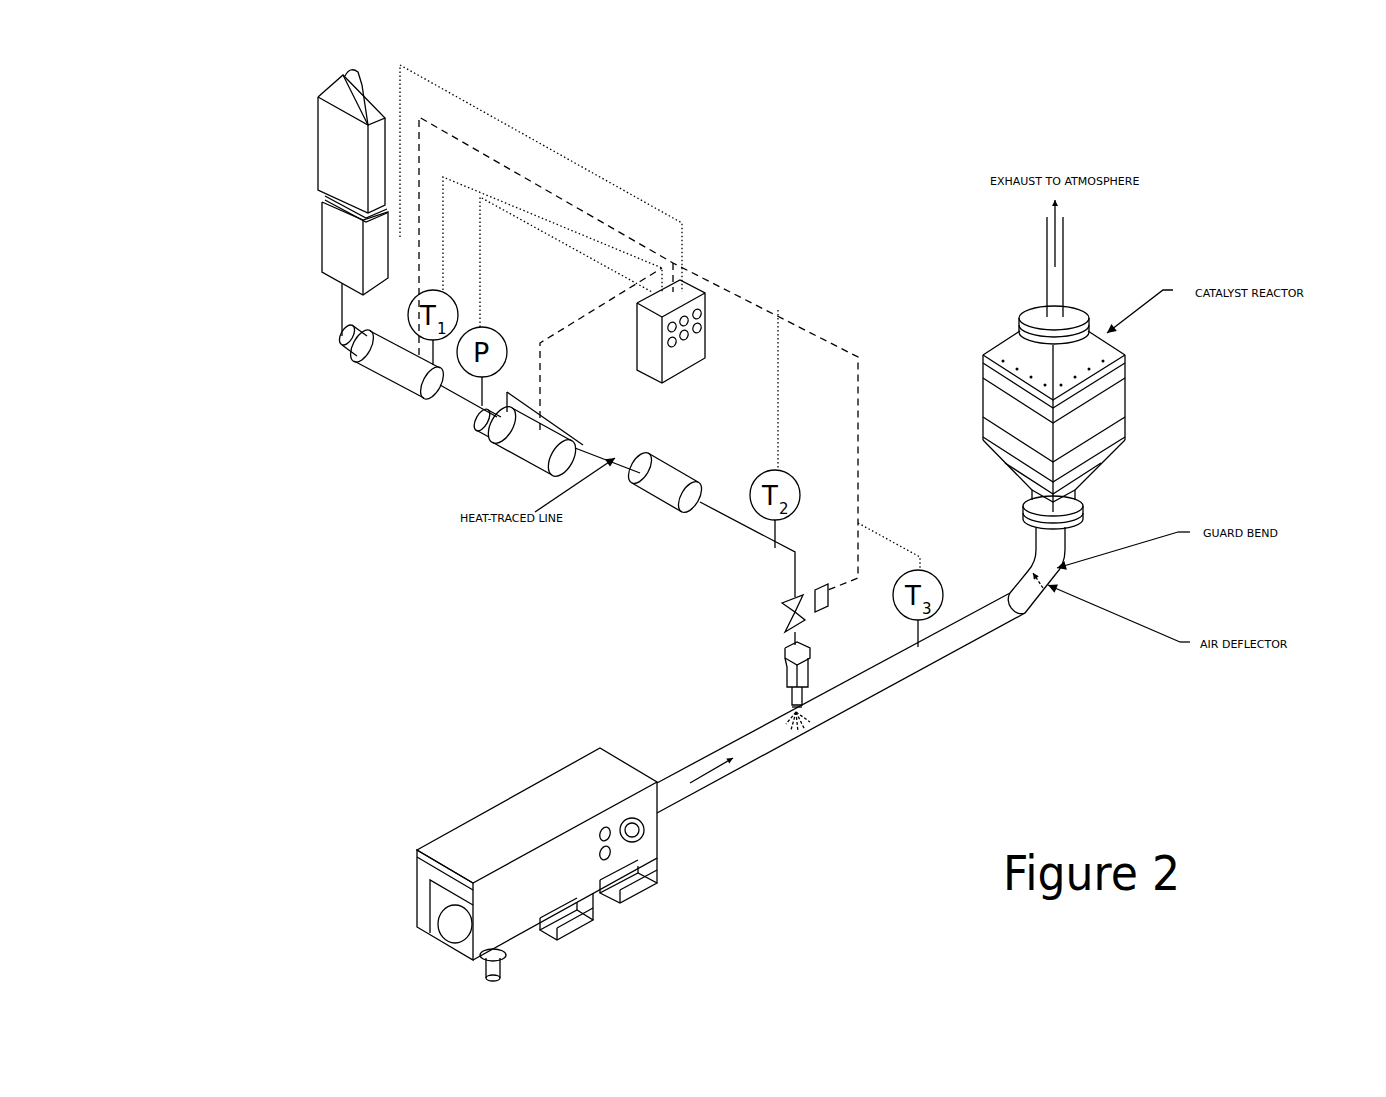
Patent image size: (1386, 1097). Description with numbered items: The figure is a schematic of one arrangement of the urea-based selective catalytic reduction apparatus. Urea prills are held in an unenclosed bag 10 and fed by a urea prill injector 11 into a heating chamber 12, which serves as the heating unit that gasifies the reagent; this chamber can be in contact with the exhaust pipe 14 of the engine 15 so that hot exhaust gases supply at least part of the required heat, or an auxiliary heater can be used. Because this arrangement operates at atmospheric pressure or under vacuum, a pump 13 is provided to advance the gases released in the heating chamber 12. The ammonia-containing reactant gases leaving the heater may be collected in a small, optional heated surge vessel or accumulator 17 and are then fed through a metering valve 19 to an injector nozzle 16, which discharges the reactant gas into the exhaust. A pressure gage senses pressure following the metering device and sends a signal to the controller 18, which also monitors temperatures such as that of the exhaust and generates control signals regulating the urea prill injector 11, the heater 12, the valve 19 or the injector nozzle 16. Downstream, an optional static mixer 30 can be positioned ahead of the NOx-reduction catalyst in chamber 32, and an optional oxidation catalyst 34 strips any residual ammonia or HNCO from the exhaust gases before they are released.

The bag 10 is at (256, 146).
The urea prill injector 11 is at (357, 248).
The heating chamber 12 is at (345, 394).
The pump 13 is at (425, 463).
The exhaust pipe 14 is at (786, 743).
The engine 15 is at (432, 864).
The injector nozzle 16 is at (710, 677).
The accumulator 17 is at (625, 518).
The controller 18 is at (702, 367).
The valve 19 is at (793, 603).
The static mixer 30 is at (1148, 453).
The chamber 32 is at (1156, 397).
The oxidation catalyst 34 is at (1179, 360).